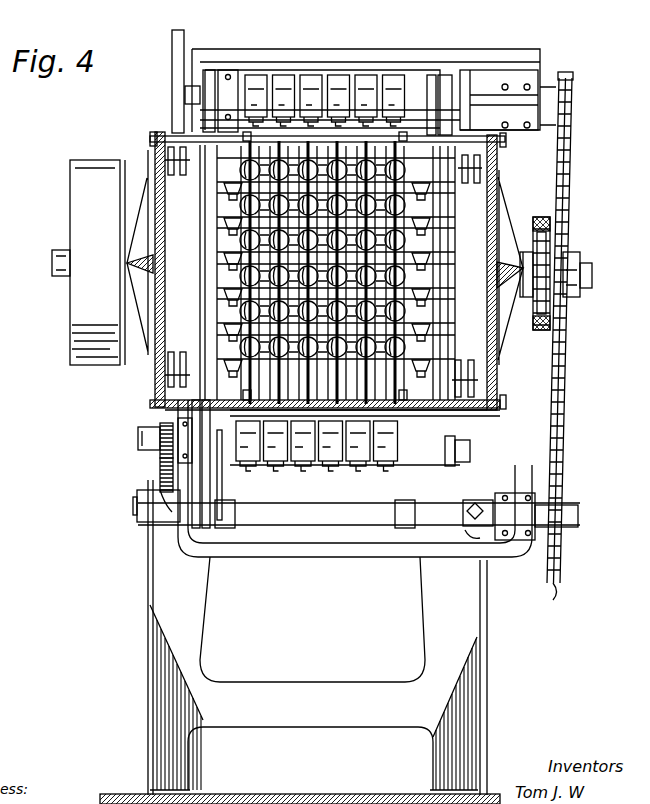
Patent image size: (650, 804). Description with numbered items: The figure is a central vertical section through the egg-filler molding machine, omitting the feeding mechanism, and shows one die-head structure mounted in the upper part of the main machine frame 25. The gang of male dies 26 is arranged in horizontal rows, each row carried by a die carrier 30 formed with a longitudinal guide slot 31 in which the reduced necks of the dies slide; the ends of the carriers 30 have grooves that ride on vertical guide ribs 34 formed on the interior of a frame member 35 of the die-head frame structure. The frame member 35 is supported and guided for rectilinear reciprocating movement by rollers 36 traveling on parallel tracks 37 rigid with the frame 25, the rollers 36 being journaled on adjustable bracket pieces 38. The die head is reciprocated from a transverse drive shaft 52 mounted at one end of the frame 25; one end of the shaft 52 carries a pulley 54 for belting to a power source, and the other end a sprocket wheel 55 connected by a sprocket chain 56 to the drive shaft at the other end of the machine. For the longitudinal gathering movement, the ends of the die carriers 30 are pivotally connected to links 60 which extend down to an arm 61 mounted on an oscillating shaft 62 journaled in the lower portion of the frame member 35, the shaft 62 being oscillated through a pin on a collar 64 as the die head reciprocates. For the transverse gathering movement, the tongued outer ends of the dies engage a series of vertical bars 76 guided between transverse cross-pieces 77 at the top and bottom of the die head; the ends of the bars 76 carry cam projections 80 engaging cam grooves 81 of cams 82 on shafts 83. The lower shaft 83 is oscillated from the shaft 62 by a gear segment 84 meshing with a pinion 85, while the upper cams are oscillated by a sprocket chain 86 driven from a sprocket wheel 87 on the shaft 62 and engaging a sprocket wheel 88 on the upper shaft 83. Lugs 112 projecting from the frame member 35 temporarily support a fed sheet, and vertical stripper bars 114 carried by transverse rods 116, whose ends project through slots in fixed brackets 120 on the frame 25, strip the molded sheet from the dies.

The main machine frame 25 is at (148, 560).
The male dies 26 is at (245, 280).
The die carrier 30 is at (218, 214).
The longitudinal guide slot 31 is at (438, 254).
The vertical guide ribs 34 is at (230, 332).
The frame member 35 is at (412, 43).
The rollers 36 is at (158, 168).
The parallel tracks 37 is at (493, 400).
The bracket pieces 38 is at (195, 355).
The transverse drive shaft 52 is at (592, 273).
The pulley 54 is at (78, 178).
The sprocket wheel 55 is at (532, 245).
The sprocket chain 56 is at (545, 212).
The links 60 is at (438, 238).
The arm 61 is at (266, 470).
The oscillating shaft 62 is at (335, 512).
The collar 64 is at (478, 528).
The vertical bars 76 is at (432, 130).
The transverse cross-pieces 77 is at (445, 132).
The cam projections 80 is at (262, 115).
The cam grooves 81 is at (318, 118).
The cams 82 is at (372, 118).
The shafts 83 is at (185, 96).
The gear segments 84 is at (160, 480).
The pinions 85 is at (138, 436).
The sprocket chains 86 is at (560, 430).
The sprocket wheels 87 is at (554, 585).
The sprocket wheel 88 is at (565, 72).
The lugs 112 is at (340, 118).
The stripper bars 114 is at (284, 118).
The transverse rods 116 is at (507, 141).
The fixed brackets 120 is at (503, 139).